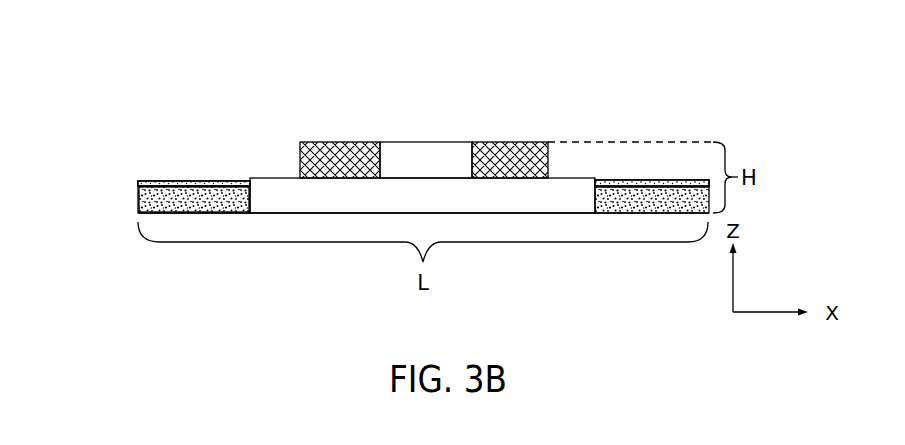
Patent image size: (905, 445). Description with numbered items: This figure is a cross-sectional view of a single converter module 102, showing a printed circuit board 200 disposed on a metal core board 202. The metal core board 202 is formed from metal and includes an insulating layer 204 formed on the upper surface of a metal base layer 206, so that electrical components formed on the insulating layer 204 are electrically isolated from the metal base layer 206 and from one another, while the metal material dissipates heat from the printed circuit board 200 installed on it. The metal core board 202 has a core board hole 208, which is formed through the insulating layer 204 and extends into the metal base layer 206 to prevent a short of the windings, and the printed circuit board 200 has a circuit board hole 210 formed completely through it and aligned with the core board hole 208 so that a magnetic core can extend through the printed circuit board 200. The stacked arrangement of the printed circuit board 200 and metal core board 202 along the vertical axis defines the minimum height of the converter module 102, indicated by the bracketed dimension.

The converter module 102 is at (134, 119).
The printed circuit board 200 is at (523, 150).
The metal core board 202 is at (135, 211).
The insulating layer 204 is at (146, 182).
The metal base layer 206 is at (186, 197).
The core board hole 208 is at (291, 187).
The circuit board hole 210 is at (419, 151).